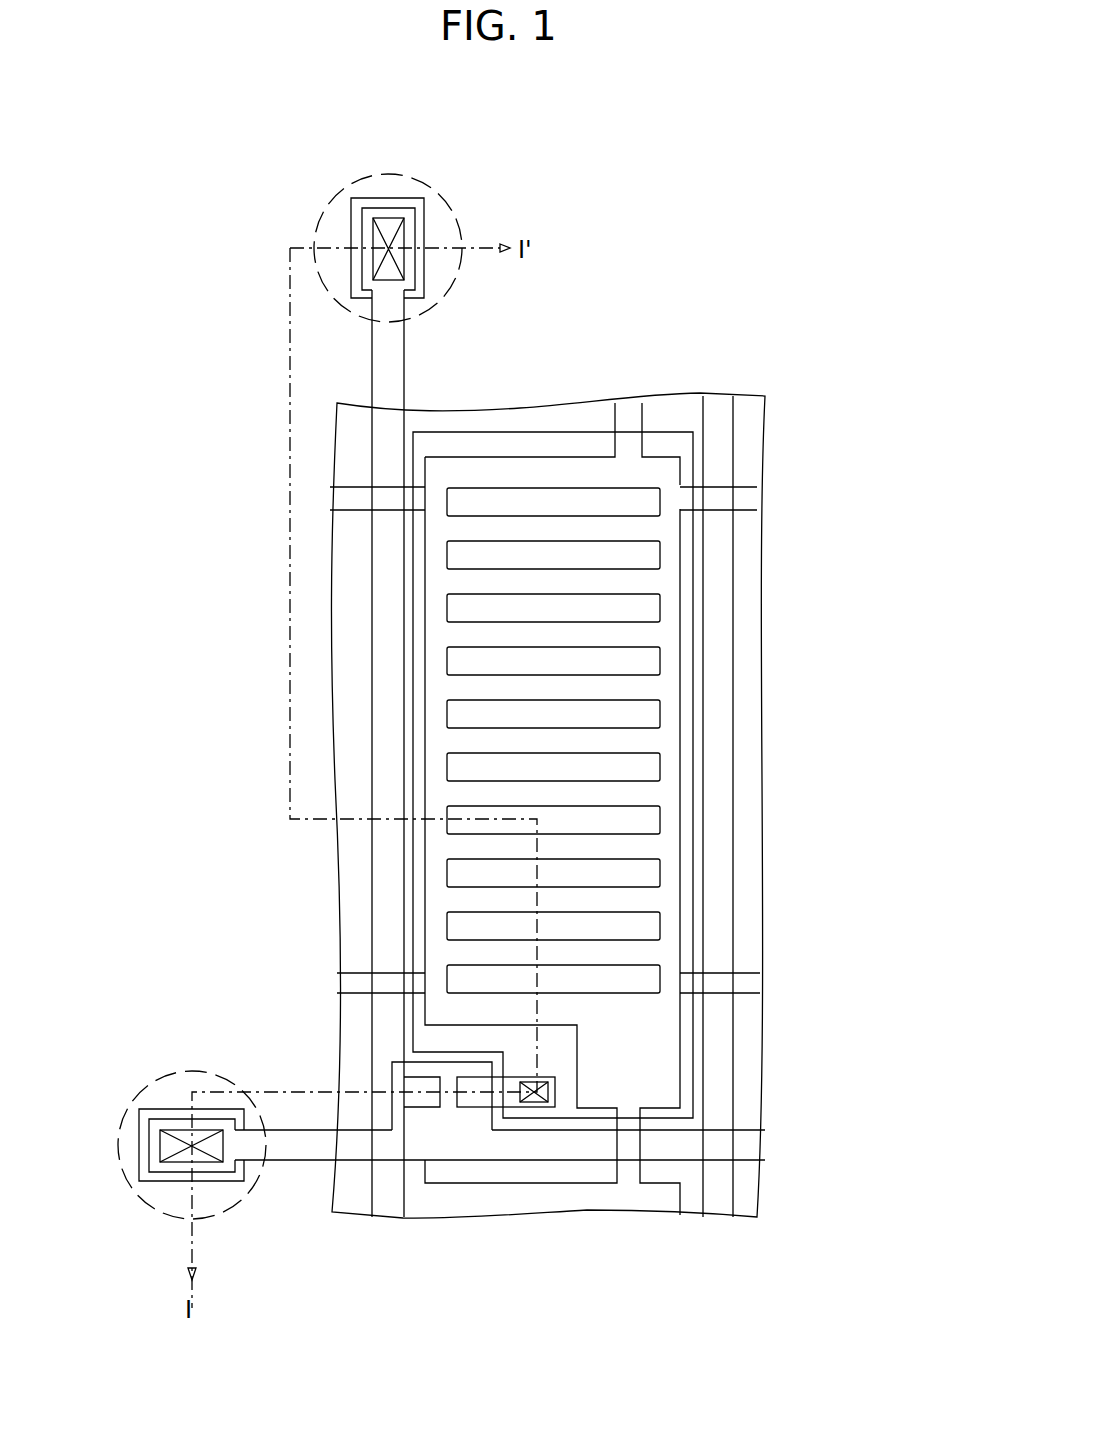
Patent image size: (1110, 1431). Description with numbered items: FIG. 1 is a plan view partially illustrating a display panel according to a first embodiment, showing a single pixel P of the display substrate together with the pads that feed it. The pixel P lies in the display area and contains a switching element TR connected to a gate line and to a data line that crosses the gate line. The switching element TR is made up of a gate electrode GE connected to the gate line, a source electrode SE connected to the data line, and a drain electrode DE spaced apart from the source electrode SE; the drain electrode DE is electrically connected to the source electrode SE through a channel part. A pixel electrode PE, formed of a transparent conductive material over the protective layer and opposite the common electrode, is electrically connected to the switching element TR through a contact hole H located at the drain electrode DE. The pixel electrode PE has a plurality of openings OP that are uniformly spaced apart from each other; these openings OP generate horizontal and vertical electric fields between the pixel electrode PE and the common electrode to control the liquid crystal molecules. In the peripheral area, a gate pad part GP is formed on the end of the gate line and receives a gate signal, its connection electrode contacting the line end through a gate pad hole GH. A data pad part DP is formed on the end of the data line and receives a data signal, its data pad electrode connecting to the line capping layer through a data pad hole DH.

The pixel P is at (619, 375).
The pixel electrode PE is at (646, 741).
The openings OP is at (646, 661).
The switching element TR is at (473, 1196).
The gate electrode GE is at (447, 1105).
The source electrode SE is at (413, 1100).
The drain electrode DE is at (477, 1100).
The contact hole H is at (556, 1092).
The data pad part DP is at (424, 211).
The data pad hole DH is at (406, 228).
The gate pad part GP is at (191, 1109).
The gate pad hole GH is at (172, 1130).